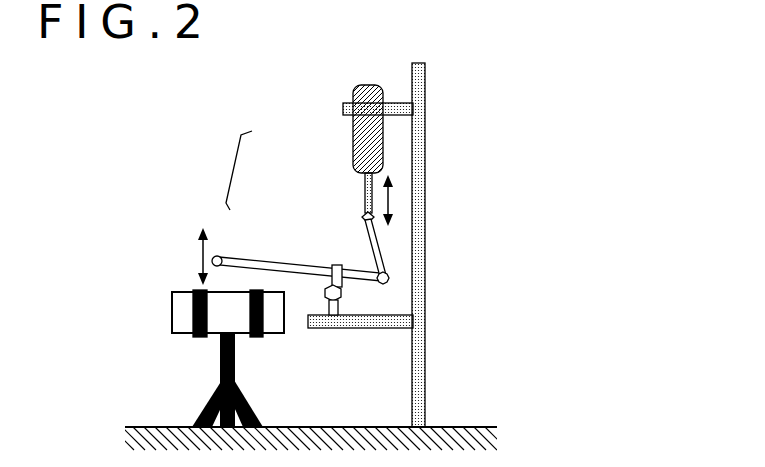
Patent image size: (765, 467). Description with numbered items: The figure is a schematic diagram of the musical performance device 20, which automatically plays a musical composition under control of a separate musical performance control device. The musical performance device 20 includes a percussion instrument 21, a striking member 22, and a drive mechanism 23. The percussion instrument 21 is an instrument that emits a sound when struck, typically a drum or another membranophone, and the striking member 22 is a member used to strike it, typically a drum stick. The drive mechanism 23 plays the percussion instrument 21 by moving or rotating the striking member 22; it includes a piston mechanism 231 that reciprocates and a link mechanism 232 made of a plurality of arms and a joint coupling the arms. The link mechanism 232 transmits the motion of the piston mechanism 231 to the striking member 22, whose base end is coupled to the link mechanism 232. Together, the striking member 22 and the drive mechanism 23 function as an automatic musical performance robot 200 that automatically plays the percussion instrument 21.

The musical performance device 20 is at (195, 212).
The percussion instrument 21 is at (183, 291).
The automatic musical performance robot 200 is at (223, 170).
The striking member 22 is at (250, 261).
The drive mechanism 23 is at (325, 175).
The piston mechanism 231 is at (355, 130).
The link mechanism 232 is at (365, 200).